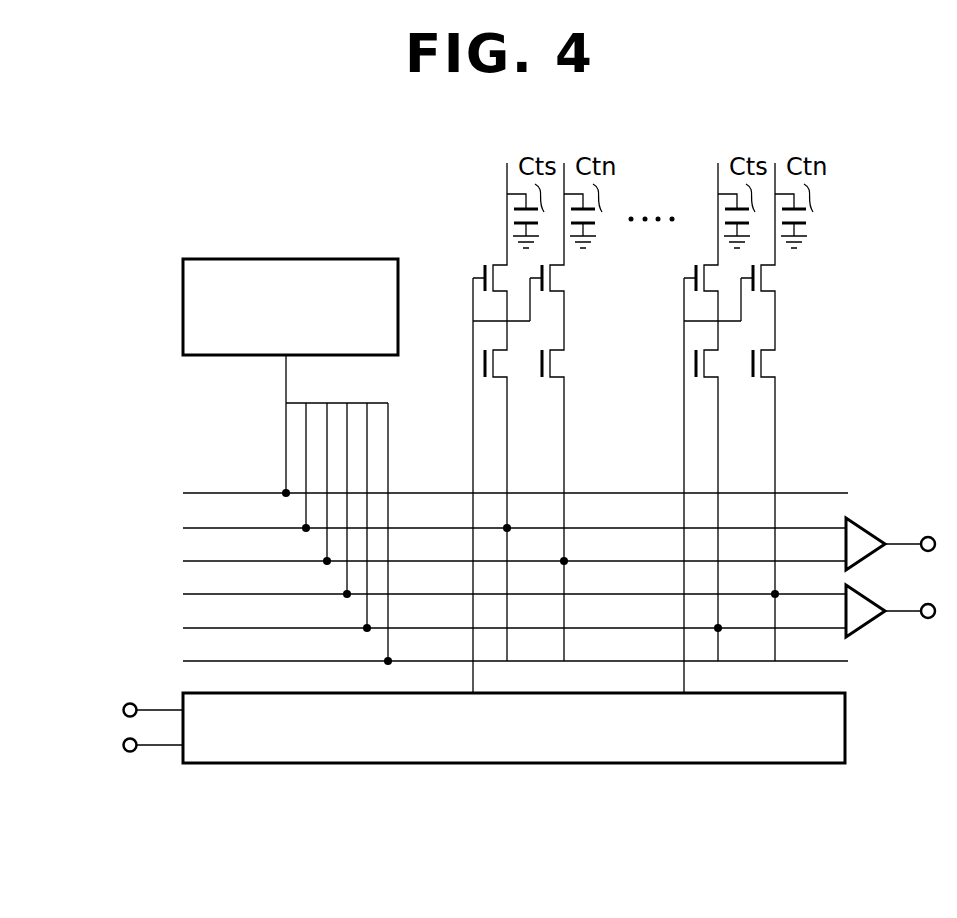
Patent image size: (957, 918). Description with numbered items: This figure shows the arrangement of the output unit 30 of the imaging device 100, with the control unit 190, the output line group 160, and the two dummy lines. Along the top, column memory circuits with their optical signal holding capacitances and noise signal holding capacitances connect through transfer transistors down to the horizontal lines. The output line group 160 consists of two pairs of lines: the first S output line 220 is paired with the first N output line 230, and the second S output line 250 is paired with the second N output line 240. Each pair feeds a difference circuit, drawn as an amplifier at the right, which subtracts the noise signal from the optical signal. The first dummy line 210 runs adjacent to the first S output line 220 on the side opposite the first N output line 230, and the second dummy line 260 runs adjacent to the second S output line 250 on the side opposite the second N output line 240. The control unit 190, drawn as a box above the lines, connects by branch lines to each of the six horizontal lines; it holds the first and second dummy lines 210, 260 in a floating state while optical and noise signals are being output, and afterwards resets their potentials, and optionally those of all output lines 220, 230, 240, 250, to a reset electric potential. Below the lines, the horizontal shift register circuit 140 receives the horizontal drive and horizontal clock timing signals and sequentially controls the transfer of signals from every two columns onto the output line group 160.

The output unit 30 is at (134, 234).
The control unit 190 is at (183, 300).
The output line group 160 is at (115, 492).
The first dummy line 210 is at (197, 493).
The first S output line 220 is at (197, 528).
The first N output line 230 is at (197, 561).
The second N output line 240 is at (197, 594).
The second S output line 250 is at (197, 628).
The second dummy line 260 is at (197, 661).
The horizontal shift register circuit 140 is at (846, 728).
The solid-state imaging device 100 is at (201, 811).